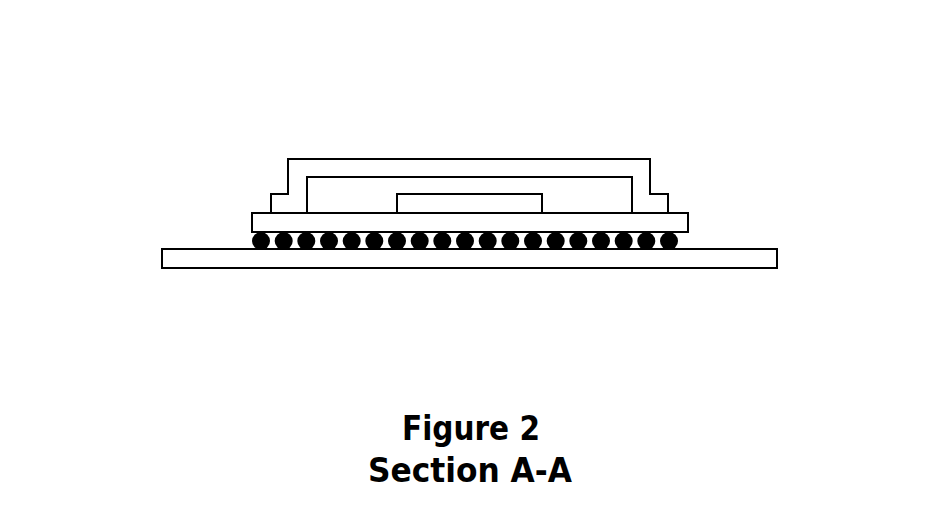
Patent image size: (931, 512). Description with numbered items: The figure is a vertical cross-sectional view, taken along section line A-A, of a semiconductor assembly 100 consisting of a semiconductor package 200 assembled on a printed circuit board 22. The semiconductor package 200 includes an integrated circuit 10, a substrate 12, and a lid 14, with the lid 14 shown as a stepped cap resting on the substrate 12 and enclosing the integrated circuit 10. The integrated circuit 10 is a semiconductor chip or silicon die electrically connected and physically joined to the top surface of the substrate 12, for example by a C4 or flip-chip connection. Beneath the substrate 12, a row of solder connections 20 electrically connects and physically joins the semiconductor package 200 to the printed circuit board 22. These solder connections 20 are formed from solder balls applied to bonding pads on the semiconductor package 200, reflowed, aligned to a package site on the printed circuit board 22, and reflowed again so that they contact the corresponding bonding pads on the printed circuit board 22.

The semiconductor assembly 100 is at (124, 70).
The semiconductor package 200 is at (147, 158).
The integrated circuit 10 is at (478, 205).
The substrate 12 is at (677, 222).
The lid 14 is at (641, 167).
The solder connections 20 is at (680, 239).
The printed circuit board 22 is at (723, 257).